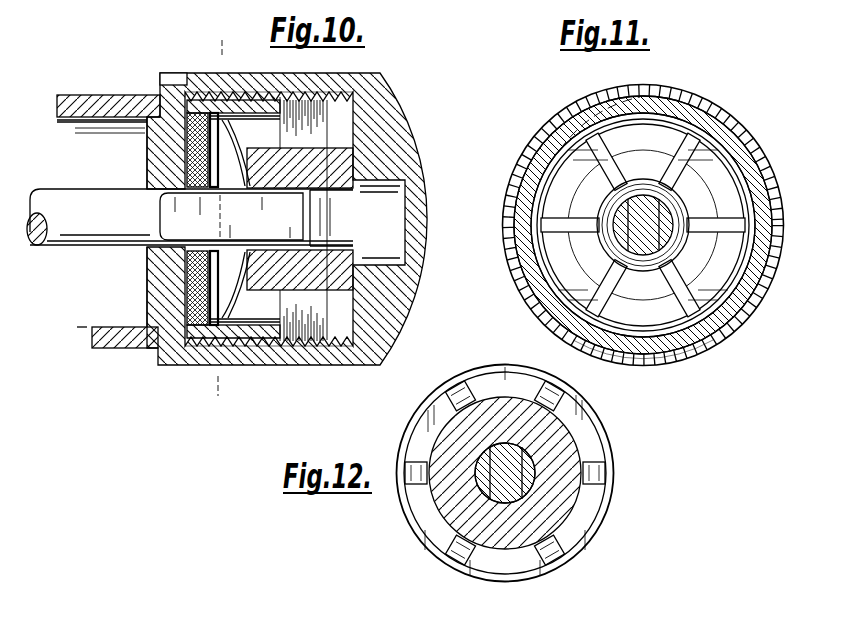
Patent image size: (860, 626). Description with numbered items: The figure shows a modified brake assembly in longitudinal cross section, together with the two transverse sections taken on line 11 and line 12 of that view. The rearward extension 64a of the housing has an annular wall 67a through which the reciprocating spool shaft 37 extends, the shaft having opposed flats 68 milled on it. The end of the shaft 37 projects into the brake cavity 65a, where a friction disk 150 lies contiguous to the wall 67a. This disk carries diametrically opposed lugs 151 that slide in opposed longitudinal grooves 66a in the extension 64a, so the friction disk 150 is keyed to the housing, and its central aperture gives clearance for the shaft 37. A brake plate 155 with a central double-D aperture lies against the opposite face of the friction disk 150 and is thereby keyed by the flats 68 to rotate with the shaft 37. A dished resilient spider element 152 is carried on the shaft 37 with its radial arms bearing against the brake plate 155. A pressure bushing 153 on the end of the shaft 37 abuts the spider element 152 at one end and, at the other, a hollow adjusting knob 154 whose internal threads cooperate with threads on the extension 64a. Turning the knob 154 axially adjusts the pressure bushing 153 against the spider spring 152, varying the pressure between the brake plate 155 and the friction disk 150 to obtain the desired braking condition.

In FIG. 10, the section line 11— 11 is at (238, 48).
In FIG. 10, the section line 12— 12 is at (343, 134).
In FIG. 10, the reciprocating spool shaft 37 is at (92, 228).
In FIG. 11, the reciprocating spool shaft 37 is at (645, 240).
In FIG. 12, the reciprocating spool shaft 37 is at (513, 475).
In FIG. 10, the rearward extension of the housing 64a is at (88, 76).
In FIG. 10, the brake cavity 65a is at (281, 96).
In FIG. 10, the longitudinal grooves 66a is at (253, 342).
In FIG. 10, the annular wall 67a is at (147, 146).
In FIG. 11, the annular wall 67a is at (687, 113).
In FIG. 10, the opposed flats 68 is at (177, 228).
In FIG. 11, the opposed flats 68 is at (703, 203).
In FIG. 12, the opposed flats 68 is at (528, 572).
In FIG. 10, the friction disk 150 is at (190, 293).
In FIG. 10, the lugs 151 is at (152, 350).
In FIG. 10, the dished resilient spider element 152 is at (257, 342).
In FIG. 11, the dished resilient spider element 152 is at (600, 105).
In FIG. 12, the dished resilient spider element 152 is at (590, 468).
In FIG. 10, the pressure bushing 153 is at (333, 285).
In FIG. 11, the pressure bushing 153 is at (686, 208).
In FIG. 12, the pressure bushing 153 is at (557, 432).
In FIG. 10, the hollow adjusting knob 154 is at (417, 258).
In FIG. 11, the hollow adjusting knob 154 is at (703, 353).
In FIG. 10, the brake plate 155 is at (212, 95).
In FIG. 11, the brake plate 155 is at (562, 195).
In FIG. 12, the brake plate 155 is at (580, 523).